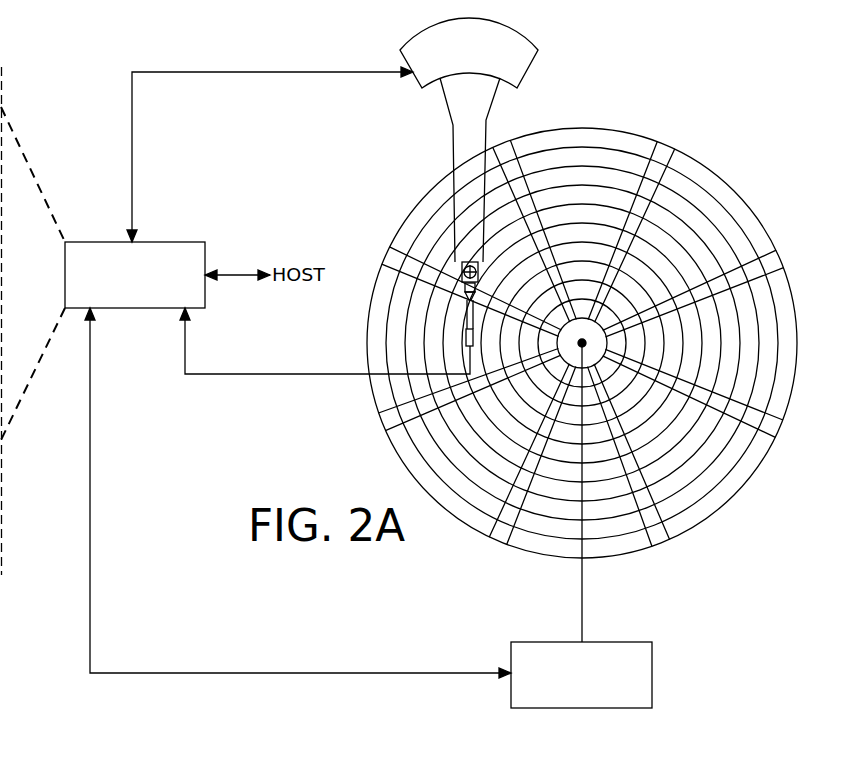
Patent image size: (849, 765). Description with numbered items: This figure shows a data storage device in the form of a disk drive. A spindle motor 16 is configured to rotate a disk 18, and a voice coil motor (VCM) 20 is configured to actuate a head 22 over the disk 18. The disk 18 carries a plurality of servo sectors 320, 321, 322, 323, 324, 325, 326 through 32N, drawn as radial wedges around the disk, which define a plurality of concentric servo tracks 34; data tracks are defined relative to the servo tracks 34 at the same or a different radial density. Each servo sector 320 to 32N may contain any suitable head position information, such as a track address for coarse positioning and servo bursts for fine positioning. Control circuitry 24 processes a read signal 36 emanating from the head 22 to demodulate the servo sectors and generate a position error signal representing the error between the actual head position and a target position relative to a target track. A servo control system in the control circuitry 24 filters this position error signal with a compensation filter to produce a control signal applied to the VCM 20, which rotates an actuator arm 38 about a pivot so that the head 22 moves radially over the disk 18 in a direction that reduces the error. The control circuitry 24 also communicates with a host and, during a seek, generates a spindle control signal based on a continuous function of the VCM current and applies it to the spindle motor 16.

The spindle motor 16 is at (652, 672).
The disk 18 is at (735, 173).
The voice coil motor (VCM) 20 is at (412, 79).
The head 22 is at (458, 346).
The control circuitry 24 is at (135, 308).
The servo tracks 34 is at (572, 157).
The read signal 36 is at (265, 374).
The actuator arm 38 is at (452, 148).
The servo sector 320 is at (667, 152).
The servo sector 321 is at (773, 265).
The servo sector 322 is at (780, 431).
The servo sector 323 is at (660, 546).
The servo sector 324 is at (499, 547).
The servo sector 325 is at (383, 422).
The servo sector 326 is at (385, 262).
The servo sector 32N is at (502, 152).